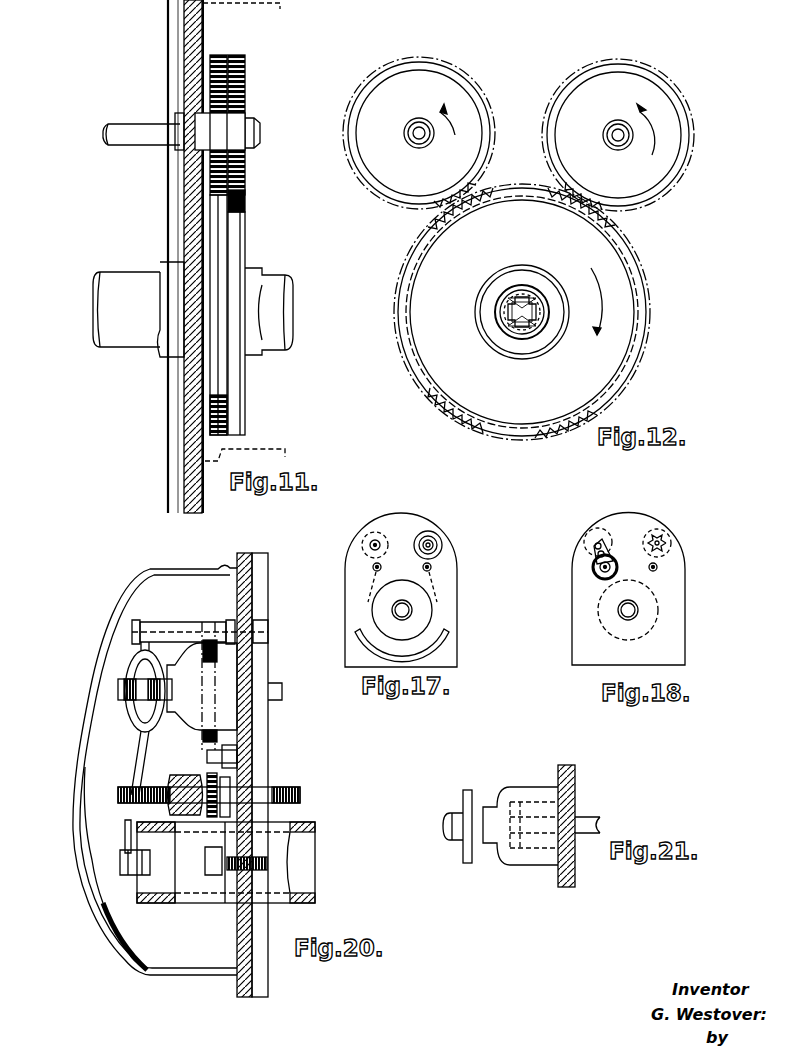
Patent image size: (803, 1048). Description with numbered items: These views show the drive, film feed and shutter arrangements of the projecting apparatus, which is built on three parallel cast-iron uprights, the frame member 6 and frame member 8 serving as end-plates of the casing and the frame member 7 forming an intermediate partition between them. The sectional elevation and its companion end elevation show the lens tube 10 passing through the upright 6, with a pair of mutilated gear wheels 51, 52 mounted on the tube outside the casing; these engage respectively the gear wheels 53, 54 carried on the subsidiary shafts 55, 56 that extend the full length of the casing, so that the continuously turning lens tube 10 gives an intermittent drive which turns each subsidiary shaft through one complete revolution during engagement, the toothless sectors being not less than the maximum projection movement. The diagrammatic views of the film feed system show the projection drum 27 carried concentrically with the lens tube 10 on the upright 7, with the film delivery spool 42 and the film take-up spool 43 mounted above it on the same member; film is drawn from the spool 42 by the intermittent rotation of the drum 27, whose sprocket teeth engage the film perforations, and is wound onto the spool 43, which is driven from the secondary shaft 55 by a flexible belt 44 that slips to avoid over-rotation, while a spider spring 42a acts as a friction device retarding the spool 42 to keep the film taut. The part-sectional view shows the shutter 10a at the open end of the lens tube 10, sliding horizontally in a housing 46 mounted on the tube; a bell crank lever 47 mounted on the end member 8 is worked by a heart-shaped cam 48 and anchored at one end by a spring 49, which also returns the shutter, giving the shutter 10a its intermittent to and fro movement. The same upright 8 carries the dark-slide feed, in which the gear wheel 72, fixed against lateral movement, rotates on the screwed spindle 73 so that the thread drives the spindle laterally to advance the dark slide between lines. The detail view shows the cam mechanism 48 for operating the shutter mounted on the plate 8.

In FIG. 11, the upright frame member 6 is at (192, 180).
In FIG. 17, the upright frame member 7 is at (443, 614).
In FIG. 18, the upright frame member 7 is at (668, 582).
In FIG. 20, the upright frame member 8 is at (241, 924).
In FIG. 21, the upright frame member 8 is at (575, 771).
In FIG. 11, the lens tube 10 is at (142, 282).
In FIG. 12, the lens tube 10 is at (500, 311).
In FIG. 17, the lens tube 10 is at (393, 609).
In FIG. 18, the lens tube 10 is at (640, 607).
In FIG. 20, the lens tube 10 is at (300, 828).
In FIG. 20, the shutter 10a is at (152, 882).
In FIG. 17, the projection drum 27 is at (420, 606).
In FIG. 18, the projection drum 27 is at (598, 610).
In FIG. 17, the film delivery spool 42 is at (444, 536).
In FIG. 18, the film delivery spool 42 is at (671, 540).
In FIG. 18, the spider spring 42a is at (660, 540).
In FIG. 17, the film take-up spool 43 is at (384, 530).
In FIG. 18, the film take-up spool 43 is at (588, 535).
In FIG. 18, the flexible belt 44 is at (609, 546).
In FIG. 20, the shutter housing 46 is at (128, 800).
In FIG. 20, the bell crank lever 47 is at (142, 823).
In FIG. 20, the heart-shaped cam 48 is at (132, 667).
In FIG. 21, the heart-shaped cam 48 is at (463, 795).
In FIG. 20, the spring 49 is at (232, 645).
In FIG. 11, the mutilated gear wheel 51 is at (236, 232).
In FIG. 12, the mutilated gear wheel 51 is at (634, 277).
In FIG. 11, the mutilated gear wheel 52 is at (238, 208).
In FIG. 12, the mutilated gear wheel 52 is at (522, 312).
In FIG. 11, the gear wheel 53 is at (244, 100).
In FIG. 12, the gear wheel 53 is at (478, 104).
In FIG. 11, the gear wheel 54 is at (232, 78).
In FIG. 12, the gear wheel 54 is at (546, 126).
In FIG. 11, the subsidiary shaft 55 is at (261, 133).
In FIG. 12, the subsidiary shaft 55 is at (418, 133).
In FIG. 18, the subsidiary shaft 55 is at (603, 567).
In FIG. 11, the subsidiary shaft 56 is at (122, 128).
In FIG. 12, the subsidiary shaft 56 is at (620, 131).
In FIG. 20, the subsidiary shaft 56 is at (283, 692).
In FIG. 21, the subsidiary shaft 56 is at (601, 817).
In FIG. 20, the gear wheel 72 is at (240, 760).
In FIG. 20, the screwed spindle 73 is at (273, 789).